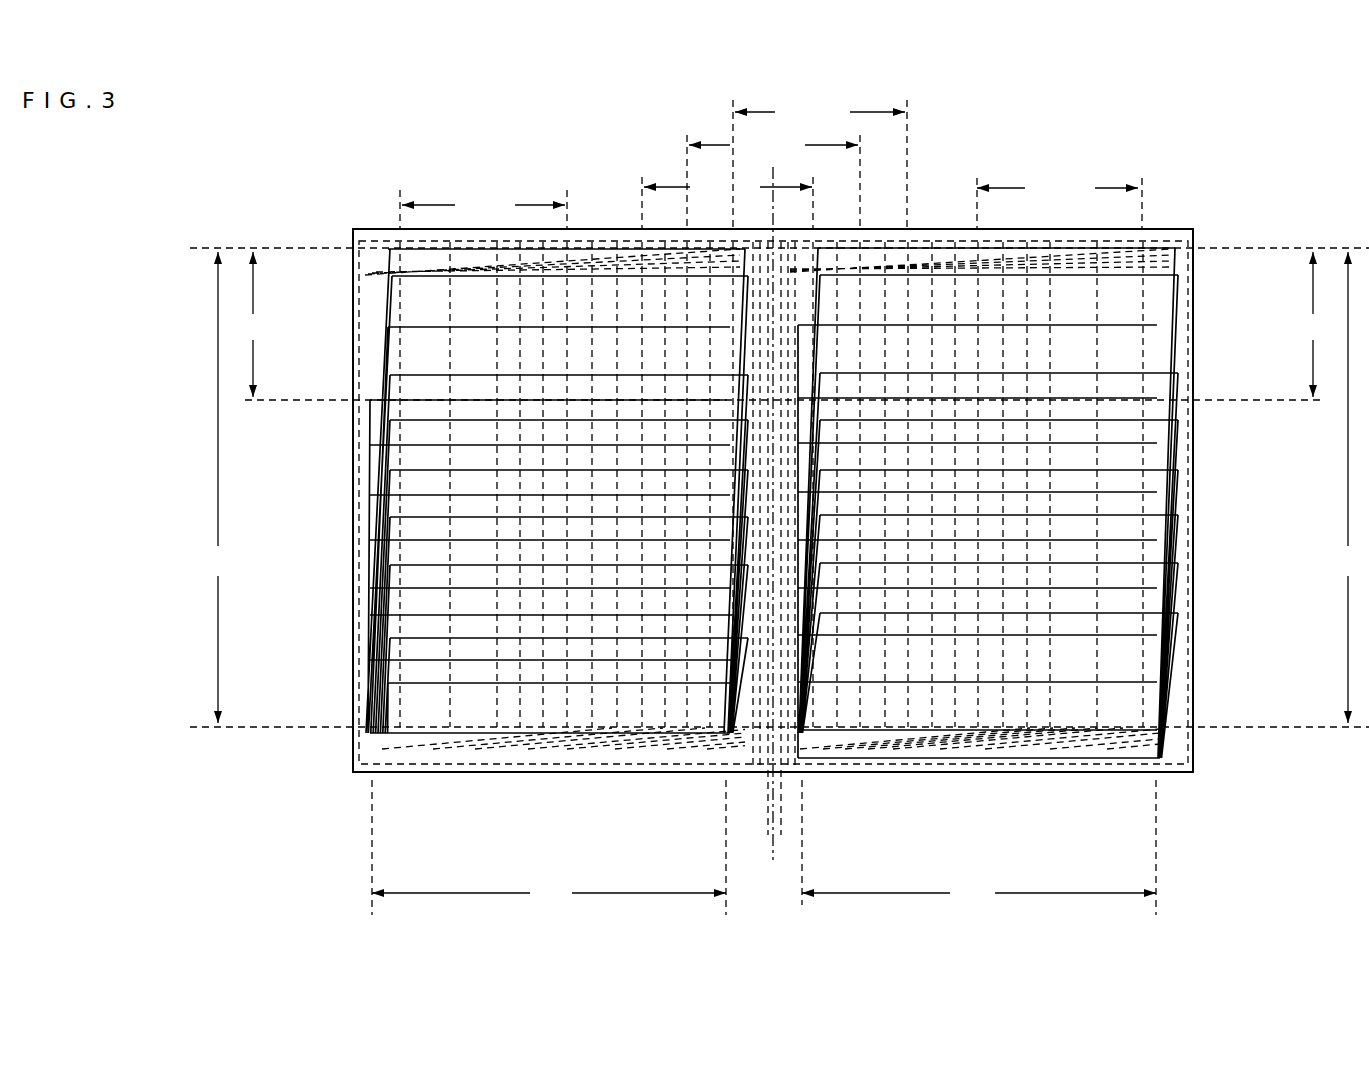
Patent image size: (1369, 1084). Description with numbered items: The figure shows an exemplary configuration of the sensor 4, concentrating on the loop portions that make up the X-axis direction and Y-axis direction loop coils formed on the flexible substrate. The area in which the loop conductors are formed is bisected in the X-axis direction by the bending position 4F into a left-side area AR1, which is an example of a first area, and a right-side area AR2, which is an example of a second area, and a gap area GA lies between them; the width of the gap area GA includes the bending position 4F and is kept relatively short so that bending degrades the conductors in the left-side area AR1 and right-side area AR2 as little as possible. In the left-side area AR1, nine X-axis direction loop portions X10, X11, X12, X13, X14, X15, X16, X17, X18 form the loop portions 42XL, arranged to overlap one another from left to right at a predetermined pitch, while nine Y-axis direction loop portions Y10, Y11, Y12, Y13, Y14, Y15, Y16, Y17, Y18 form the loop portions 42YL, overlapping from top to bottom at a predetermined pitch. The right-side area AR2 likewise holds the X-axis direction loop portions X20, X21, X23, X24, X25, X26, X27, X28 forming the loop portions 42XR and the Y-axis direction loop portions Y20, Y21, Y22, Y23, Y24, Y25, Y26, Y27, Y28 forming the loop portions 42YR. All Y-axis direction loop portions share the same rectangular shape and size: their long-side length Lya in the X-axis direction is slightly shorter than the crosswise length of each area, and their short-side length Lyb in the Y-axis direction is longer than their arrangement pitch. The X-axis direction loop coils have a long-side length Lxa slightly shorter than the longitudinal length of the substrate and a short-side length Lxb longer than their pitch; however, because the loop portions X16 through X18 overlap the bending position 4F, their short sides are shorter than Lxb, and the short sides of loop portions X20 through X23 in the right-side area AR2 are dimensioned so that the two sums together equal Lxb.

The sensor 4 is at (1150, 232).
The bending position 4F is at (774, 878).
The gap area GA is at (796, 832).
The left-side area AR1 is at (604, 240).
The right-side area AR2 is at (936, 240).
The Y-axis direction loop portions 42YL is at (315, 217).
The Y-axis direction loop portions 42YR is at (1233, 222).
The X-axis direction loop portions 42XL is at (357, 803).
The X-axis direction loop portions 42XR is at (1180, 808).
The long-side length of X-axis direction loop coils Lxa is at (783, 487).
The short-side length of X-axis direction loop coils Lxb is at (771, 164).
The long-side length of Y-axis direction loop portions Lya is at (764, 847).
The short-side length of Y-axis direction loop portions Lyb is at (781, 324).
The loop portion Y10 is at (380, 272).
The loop portion Y11 is at (382, 300).
The loop portion Y12 is at (383, 355).
The loop portion Y13 is at (383, 427).
The loop portion Y14 is at (383, 476).
The loop portion Y15 is at (383, 520).
The loop portion Y16 is at (383, 566).
The loop portion Y17 is at (383, 617).
The loop portion Y18 is at (383, 661).
The loop portion Y20 is at (1182, 265).
The loop portion Y21 is at (1182, 300).
The loop portion Y22 is at (1183, 355).
The loop portion Y23 is at (1183, 420).
The loop portion Y24 is at (1183, 455).
The loop portion Y25 is at (1183, 500).
The loop portion Y26 is at (1183, 545).
The loop portion Y27 is at (1183, 598).
The loop portion Y28 is at (1183, 645).
The loop portion X10 is at (382, 752).
The loop portion X11 is at (433, 752).
The loop portion X12 is at (475, 752).
The loop portion X13 is at (528, 752).
The loop portion X14 is at (567, 752).
The loop portion X15 is at (615, 752).
The loop portion X16 is at (667, 752).
The loop portion X17 is at (707, 752).
The loop portion X18 is at (743, 752).
The loop portion X20 is at (799, 752).
The loop portion X21 is at (812, 752).
The loop portion X23 is at (866, 752).
The loop portion X24 is at (893, 752).
The loop portion X25 is at (940, 752).
The loop portion X26 is at (985, 752).
The loop portion X27 is at (1050, 752).
The loop portion X28 is at (1107, 752).